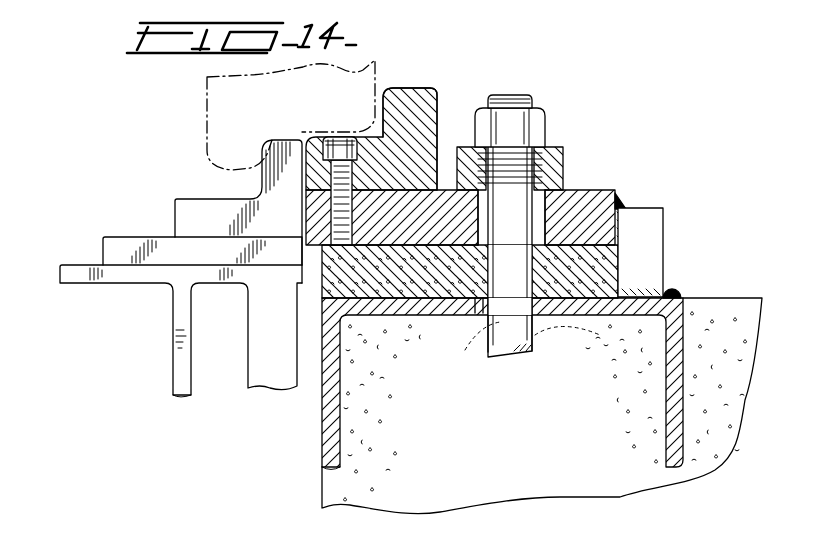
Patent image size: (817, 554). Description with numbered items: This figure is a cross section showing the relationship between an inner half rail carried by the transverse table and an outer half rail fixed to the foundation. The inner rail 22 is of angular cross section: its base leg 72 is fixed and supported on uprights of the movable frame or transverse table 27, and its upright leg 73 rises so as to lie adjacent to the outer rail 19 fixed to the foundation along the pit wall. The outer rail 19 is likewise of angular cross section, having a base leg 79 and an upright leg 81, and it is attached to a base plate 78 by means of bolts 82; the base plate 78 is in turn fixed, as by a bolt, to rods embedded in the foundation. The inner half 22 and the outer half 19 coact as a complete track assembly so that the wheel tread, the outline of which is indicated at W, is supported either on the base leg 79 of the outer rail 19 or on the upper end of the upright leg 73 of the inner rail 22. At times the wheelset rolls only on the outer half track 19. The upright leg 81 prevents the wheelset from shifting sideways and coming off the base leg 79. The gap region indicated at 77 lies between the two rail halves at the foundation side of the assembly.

The outer rail 19 is at (437, 105).
The inner rail 22 is at (227, 192).
The transverse table 27 is at (162, 363).
The base leg 72 is at (185, 220).
The upright leg 73 is at (283, 150).
The anchor bolt 77 is at (444, 153).
The base plate 78 is at (580, 210).
The base leg 79 is at (371, 127).
The upright leg 81 is at (409, 107).
The bolt 82 is at (353, 188).
The wheel flange outline W is at (367, 82).